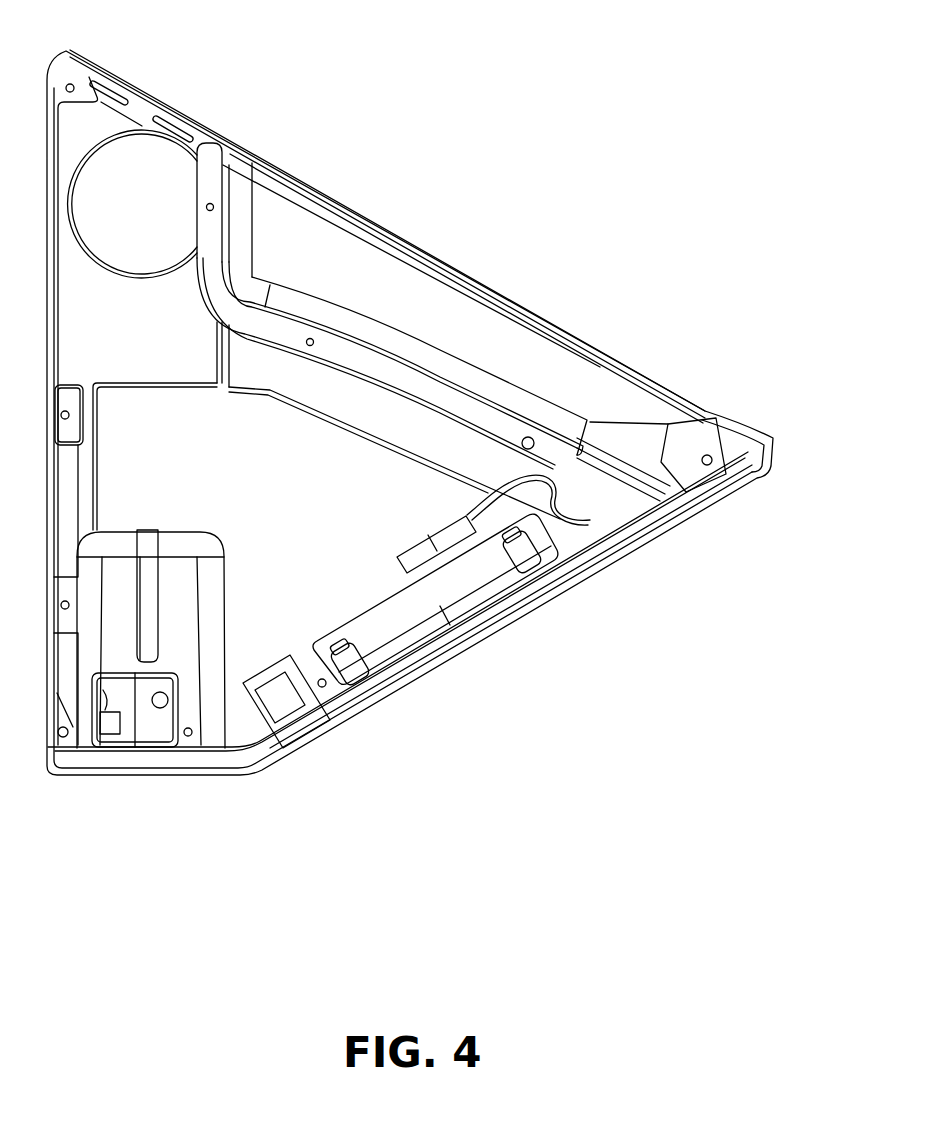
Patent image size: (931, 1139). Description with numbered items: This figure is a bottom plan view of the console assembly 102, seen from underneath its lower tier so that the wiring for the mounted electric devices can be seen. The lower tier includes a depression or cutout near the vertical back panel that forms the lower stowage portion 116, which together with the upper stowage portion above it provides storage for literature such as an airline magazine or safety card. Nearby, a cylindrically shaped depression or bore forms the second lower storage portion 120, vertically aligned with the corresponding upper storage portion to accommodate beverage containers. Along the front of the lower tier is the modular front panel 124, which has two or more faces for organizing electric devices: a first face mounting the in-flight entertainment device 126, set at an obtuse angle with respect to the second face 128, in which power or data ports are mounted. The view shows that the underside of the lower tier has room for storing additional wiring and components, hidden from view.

The console assembly 102 is at (386, 103).
The lower stowage portion 116 is at (474, 314).
The second lower storage portion 120 is at (145, 150).
The front panel 124 is at (819, 508).
The in-flight entertainment device 126 is at (521, 607).
The second face 128 is at (80, 788).